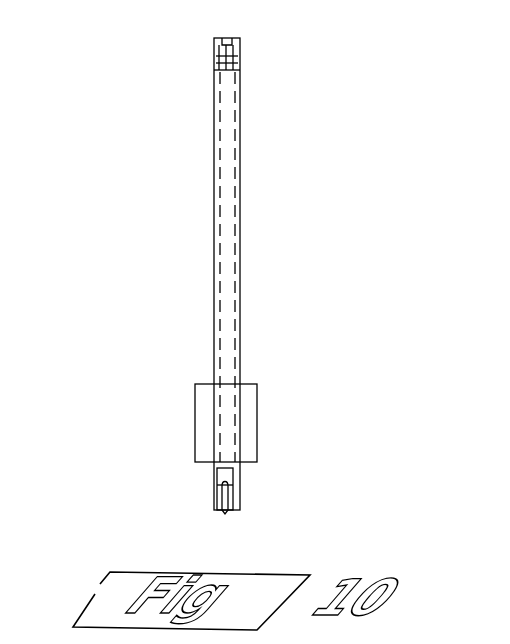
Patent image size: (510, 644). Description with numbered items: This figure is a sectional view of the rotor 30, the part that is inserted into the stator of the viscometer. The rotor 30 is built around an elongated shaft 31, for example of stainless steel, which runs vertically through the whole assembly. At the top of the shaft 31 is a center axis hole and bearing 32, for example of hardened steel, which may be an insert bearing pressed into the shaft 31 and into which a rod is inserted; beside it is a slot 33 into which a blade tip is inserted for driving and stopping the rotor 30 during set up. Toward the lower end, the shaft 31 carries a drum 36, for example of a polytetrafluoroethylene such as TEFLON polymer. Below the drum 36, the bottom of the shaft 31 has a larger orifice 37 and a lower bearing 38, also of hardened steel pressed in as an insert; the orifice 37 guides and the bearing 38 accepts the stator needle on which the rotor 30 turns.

The rotor 30 is at (170, 228).
The shaft 31 is at (241, 181).
The top, center axis hole and bearing 32 is at (241, 53).
The slot 33 is at (226, 40).
The drum 36 is at (252, 402).
The bottom, larger orifice 37 is at (214, 509).
The lower bearing 38 is at (224, 514).